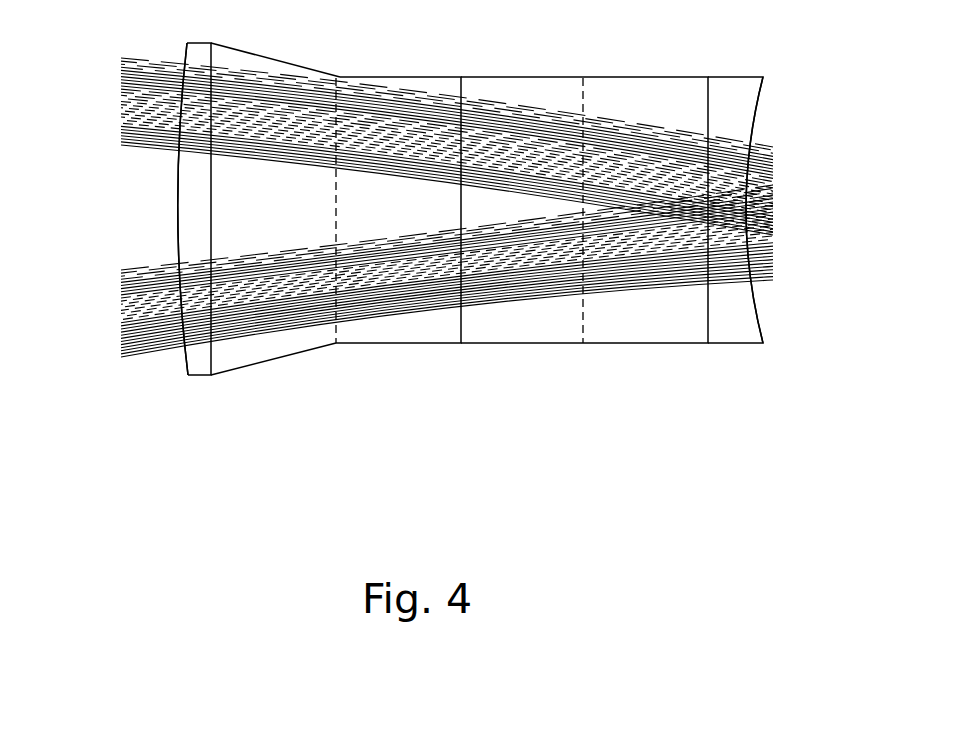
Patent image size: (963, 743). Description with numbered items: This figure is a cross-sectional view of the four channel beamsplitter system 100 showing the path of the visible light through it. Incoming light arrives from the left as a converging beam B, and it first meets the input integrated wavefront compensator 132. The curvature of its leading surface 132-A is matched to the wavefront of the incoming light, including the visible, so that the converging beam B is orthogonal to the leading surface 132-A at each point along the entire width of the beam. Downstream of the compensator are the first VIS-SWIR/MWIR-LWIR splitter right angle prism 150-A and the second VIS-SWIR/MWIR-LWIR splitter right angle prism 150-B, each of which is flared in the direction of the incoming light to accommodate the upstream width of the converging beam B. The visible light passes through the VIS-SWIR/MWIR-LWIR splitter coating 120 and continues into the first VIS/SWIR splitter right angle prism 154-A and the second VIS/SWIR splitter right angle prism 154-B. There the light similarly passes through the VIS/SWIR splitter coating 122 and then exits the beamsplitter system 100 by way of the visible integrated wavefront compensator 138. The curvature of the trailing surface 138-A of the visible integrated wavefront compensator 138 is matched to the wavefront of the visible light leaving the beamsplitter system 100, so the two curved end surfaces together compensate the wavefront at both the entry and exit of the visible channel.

The four channel beamsplitter system 100 is at (137, 398).
The VIS-SWIR/MWIR-LWIR splitter coating 120 is at (343, 77).
The VIS/SWIR splitter coating 122 is at (585, 100).
The input integrated wavefront compensator 132 is at (200, 377).
The leading surface 132-A is at (185, 51).
The visible integrated wavefront compensator 138 is at (738, 77).
The trailing surface 138-A is at (758, 313).
The first VIS-SWIR/MWIR-LWIR splitter right angle prism 150-A is at (320, 348).
The second VIS-SWIR/MWIR-LWIR splitter right angle prism 150-B is at (438, 77).
The first VIS/SWIR splitter right angle prism 154-A is at (522, 345).
The second VIS/SWIR splitter right angle prism 154-B is at (650, 344).
The converging beam B is at (128, 370).